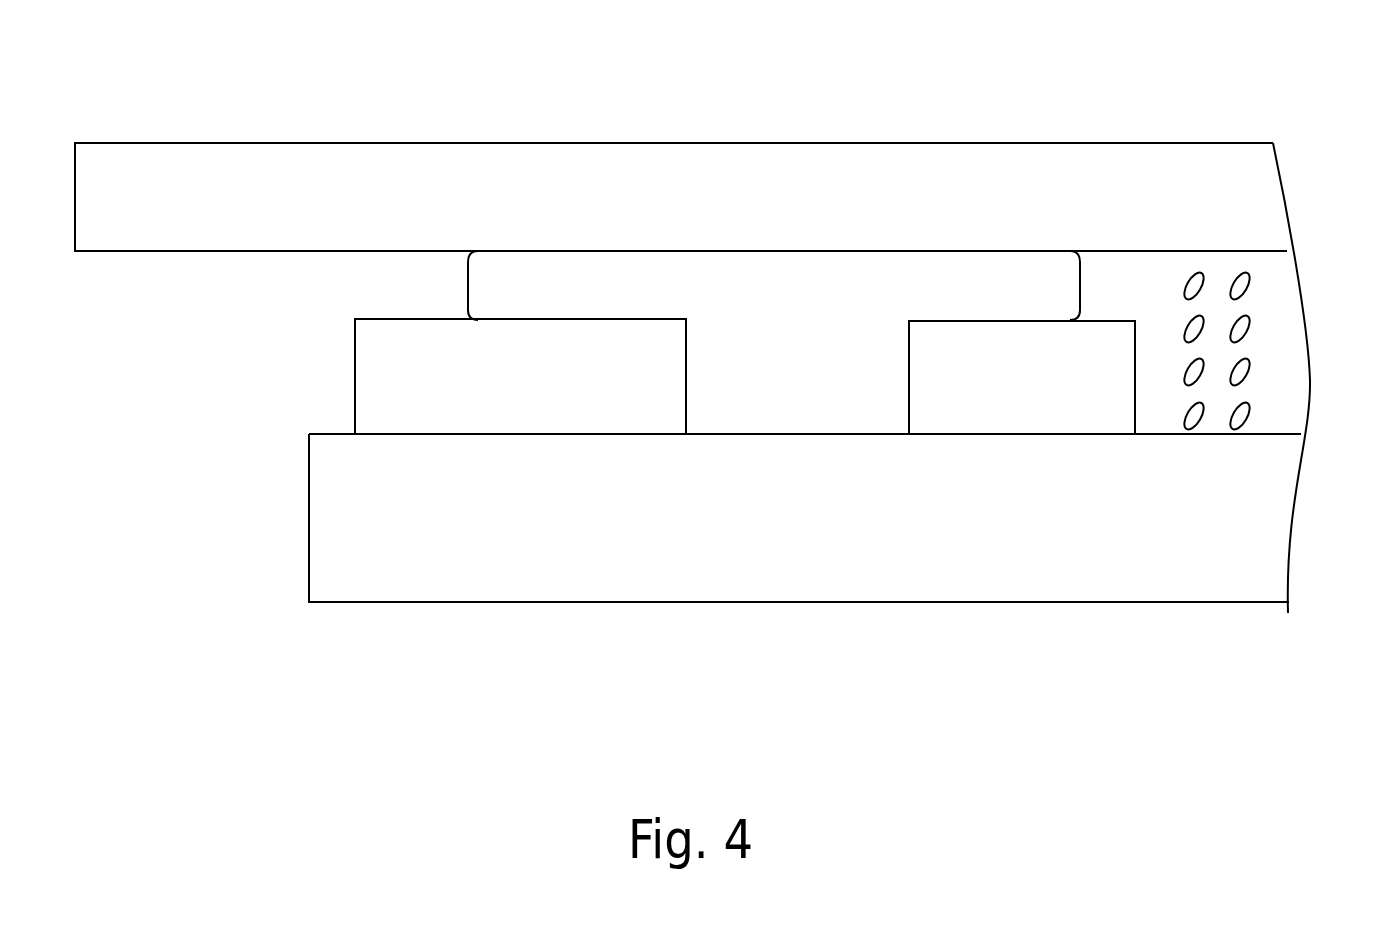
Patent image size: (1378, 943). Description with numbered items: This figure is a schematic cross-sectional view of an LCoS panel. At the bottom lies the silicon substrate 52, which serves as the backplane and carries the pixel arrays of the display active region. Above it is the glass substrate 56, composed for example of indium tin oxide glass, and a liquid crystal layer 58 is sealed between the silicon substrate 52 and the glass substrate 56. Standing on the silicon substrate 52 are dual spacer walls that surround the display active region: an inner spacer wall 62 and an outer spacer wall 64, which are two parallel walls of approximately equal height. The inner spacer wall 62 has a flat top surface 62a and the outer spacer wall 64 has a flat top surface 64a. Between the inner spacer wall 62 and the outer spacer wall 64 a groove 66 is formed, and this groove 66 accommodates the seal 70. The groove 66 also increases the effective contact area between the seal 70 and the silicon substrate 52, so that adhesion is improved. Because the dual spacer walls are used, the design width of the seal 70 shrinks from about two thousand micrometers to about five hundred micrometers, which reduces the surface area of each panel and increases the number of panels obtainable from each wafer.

The silicon substrate 52 is at (562, 594).
The glass substrate 56 is at (246, 161).
The liquid crystal layer 58 is at (1217, 307).
The inner spacer wall 62 is at (1005, 418).
The flat top surface 62a is at (1118, 320).
The outer spacer wall 64 is at (363, 374).
The flat top surface 64a is at (388, 319).
The groove 66 is at (686, 408).
The seal 70 is at (801, 370).